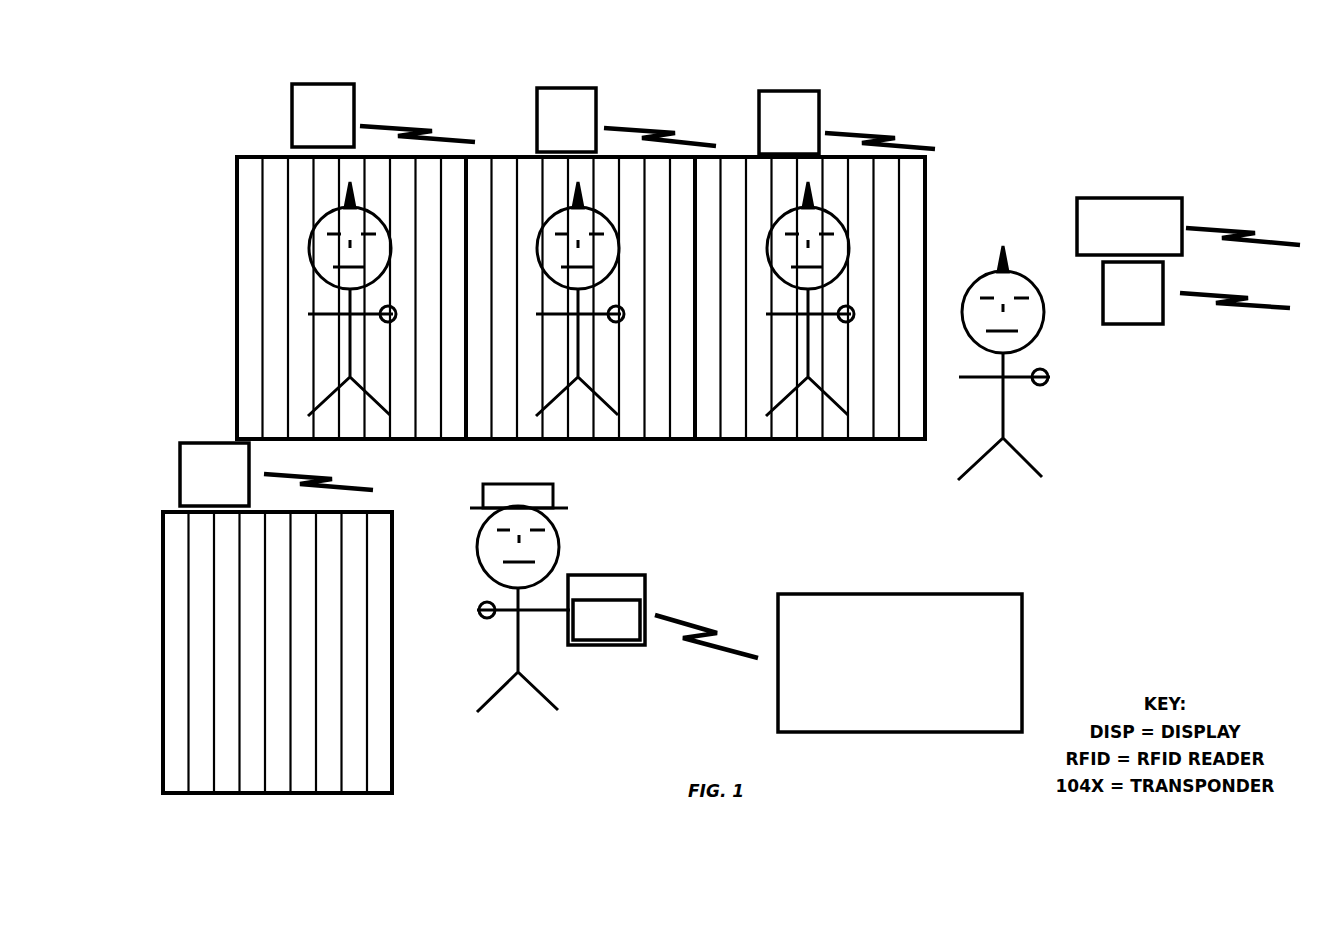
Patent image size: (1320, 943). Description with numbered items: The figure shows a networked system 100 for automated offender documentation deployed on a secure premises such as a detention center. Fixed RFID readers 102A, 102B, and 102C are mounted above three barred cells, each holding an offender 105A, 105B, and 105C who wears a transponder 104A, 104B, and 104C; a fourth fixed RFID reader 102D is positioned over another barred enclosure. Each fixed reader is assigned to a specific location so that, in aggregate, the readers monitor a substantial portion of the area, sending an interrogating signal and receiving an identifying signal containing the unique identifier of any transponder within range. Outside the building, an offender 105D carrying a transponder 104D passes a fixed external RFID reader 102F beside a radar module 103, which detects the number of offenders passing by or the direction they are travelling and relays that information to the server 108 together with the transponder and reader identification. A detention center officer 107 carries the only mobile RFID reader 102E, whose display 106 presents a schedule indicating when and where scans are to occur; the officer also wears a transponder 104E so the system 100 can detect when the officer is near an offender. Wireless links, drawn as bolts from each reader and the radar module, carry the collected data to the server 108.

The networked system 100 is at (204, 112).
The RFID reader 102A is at (344, 94).
The RFID reader 102B is at (588, 98).
The RFID reader 102C is at (809, 100).
The RFID reader 102D is at (221, 452).
The RFID reader 102E is at (657, 608).
The RFID reader 102F is at (1154, 294).
The radar module 103 is at (1159, 211).
The transponder 104A is at (390, 306).
The transponder 104B is at (618, 306).
The transponder 104C is at (848, 306).
The transponder 104D is at (1050, 369).
The transponder 104E is at (483, 604).
The offender 105A is at (354, 218).
The offender 105B is at (581, 218).
The offender 105C is at (812, 218).
The offender 105D is at (1009, 283).
The display 106 is at (624, 635).
The detention center officer 107 is at (554, 548).
The server 108 is at (899, 608).